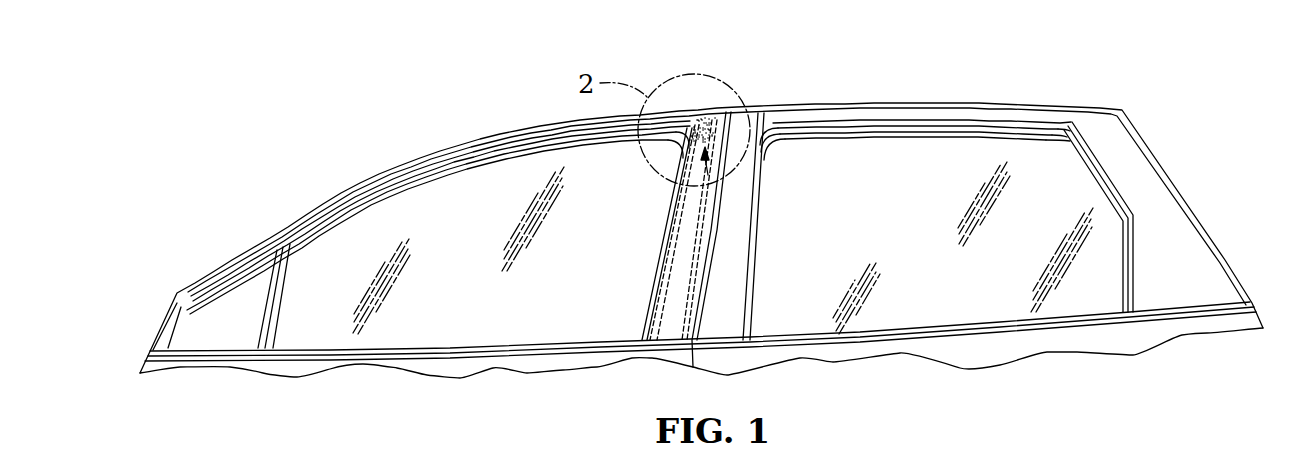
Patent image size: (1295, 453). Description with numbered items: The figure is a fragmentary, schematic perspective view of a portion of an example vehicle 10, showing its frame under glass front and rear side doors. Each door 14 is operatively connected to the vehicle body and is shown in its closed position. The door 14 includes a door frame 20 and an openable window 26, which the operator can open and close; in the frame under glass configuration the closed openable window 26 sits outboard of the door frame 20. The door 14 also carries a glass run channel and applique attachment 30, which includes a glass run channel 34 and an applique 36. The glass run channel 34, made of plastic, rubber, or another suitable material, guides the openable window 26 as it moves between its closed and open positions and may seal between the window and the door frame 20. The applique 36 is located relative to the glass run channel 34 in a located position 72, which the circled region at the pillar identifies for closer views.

The vehicle 10 is at (387, 118).
The door 14 is at (370, 187).
The door frame 20 is at (678, 140).
The openable window 26 is at (437, 328).
The glass run channel and applique attachment 30 is at (695, 184).
The glass run channel 34 is at (520, 147).
The applique 36 is at (691, 218).
The located position 72 is at (707, 100).